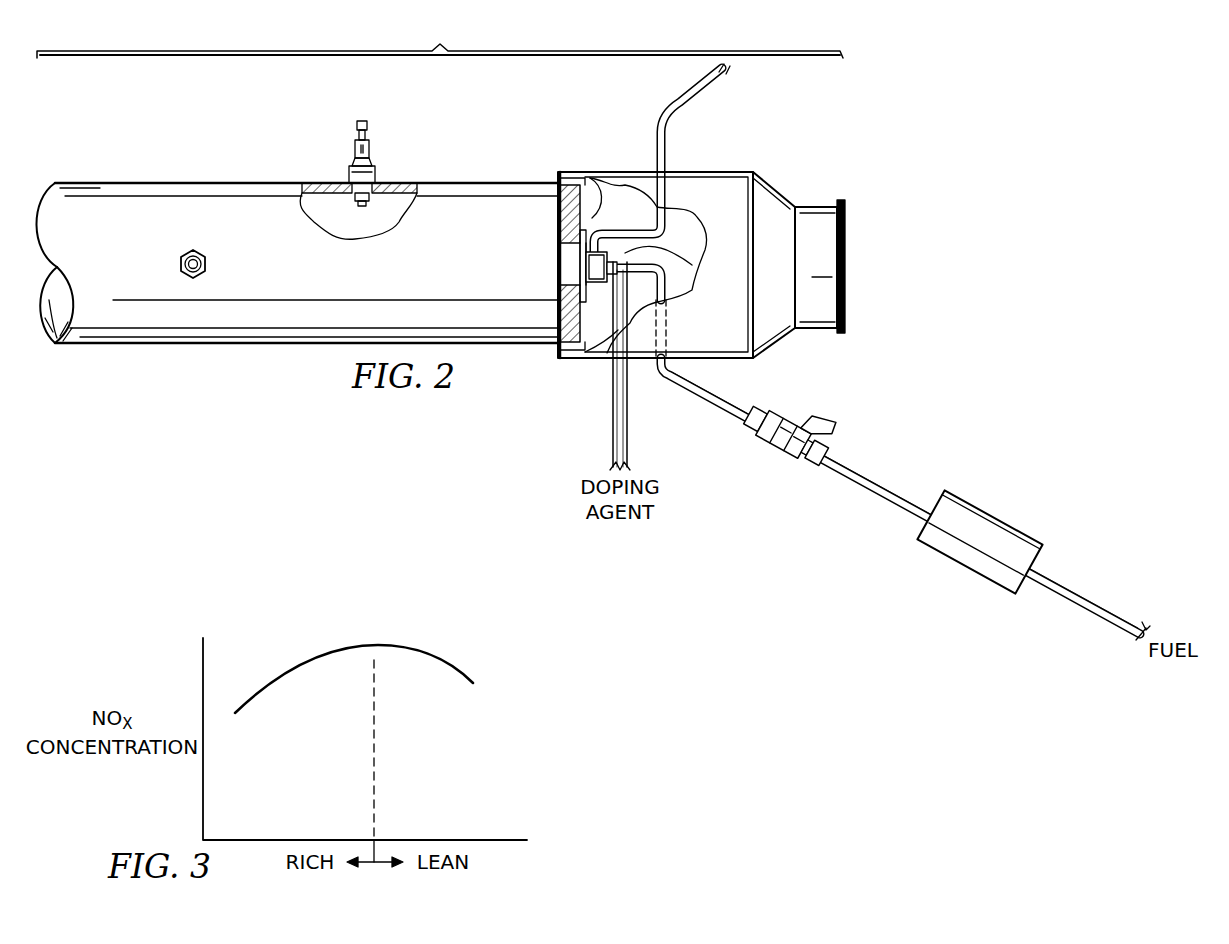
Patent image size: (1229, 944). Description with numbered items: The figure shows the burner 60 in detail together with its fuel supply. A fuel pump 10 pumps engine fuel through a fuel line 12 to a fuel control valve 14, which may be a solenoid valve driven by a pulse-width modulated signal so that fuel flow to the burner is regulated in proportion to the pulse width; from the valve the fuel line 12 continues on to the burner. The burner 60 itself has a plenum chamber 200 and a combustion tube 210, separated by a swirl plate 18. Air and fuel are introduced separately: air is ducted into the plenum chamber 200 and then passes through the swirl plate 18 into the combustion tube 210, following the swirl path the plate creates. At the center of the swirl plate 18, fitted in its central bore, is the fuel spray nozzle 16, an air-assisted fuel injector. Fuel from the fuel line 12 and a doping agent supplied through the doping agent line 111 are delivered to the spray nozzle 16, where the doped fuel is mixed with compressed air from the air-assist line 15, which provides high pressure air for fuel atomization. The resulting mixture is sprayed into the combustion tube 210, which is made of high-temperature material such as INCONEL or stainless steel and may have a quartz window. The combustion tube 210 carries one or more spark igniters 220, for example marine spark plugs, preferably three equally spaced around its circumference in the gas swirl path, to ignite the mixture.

The burner 60 is at (440, 37).
The combustion tube 210 is at (204, 182).
The spark igniter 220 is at (356, 143).
The swirl plate 18 is at (584, 172).
The air-assist line 15 is at (667, 148).
The plenum chamber 200 is at (772, 184).
The fuel spray nozzle 16 is at (700, 252).
The doping agent line 111 is at (612, 418).
The fuel control valve 14 is at (788, 410).
The fuel line 12 is at (714, 402).
The fuel pump 10 is at (1000, 516).